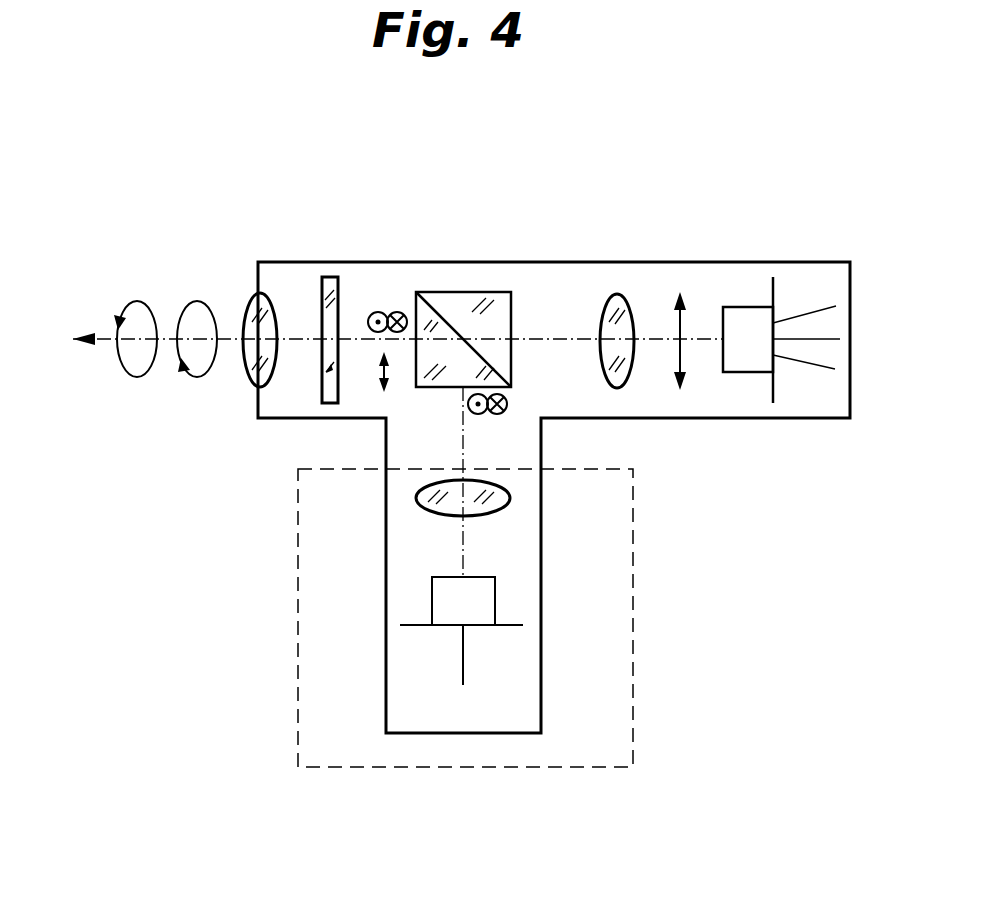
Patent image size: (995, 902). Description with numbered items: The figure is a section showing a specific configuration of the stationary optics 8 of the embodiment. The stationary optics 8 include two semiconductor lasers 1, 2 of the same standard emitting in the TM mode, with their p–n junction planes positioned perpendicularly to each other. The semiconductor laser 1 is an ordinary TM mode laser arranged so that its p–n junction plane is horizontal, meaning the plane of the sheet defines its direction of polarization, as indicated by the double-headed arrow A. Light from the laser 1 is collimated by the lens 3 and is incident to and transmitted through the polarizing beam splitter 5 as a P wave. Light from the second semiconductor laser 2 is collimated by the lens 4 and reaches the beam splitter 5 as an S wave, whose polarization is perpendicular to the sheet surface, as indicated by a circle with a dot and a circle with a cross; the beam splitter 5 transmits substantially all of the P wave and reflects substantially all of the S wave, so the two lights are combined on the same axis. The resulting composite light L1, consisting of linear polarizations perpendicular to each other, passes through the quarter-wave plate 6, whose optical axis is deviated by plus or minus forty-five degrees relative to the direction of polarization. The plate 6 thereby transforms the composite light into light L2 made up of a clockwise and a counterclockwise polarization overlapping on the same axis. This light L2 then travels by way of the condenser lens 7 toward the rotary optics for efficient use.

The semiconductor laser 1 is at (748, 330).
The semiconductor laser 2 is at (480, 603).
The lens 3 is at (622, 300).
The lens 4 is at (505, 492).
The polarizing beam splitter 5 is at (470, 302).
The quarter-wave plate 6 is at (332, 282).
The condenser lens 7 is at (264, 292).
The stationary optics 8 is at (802, 168).
The composite light L1 is at (380, 312).
The light L2 is at (168, 382).
The double-headed arrow A is at (378, 380).